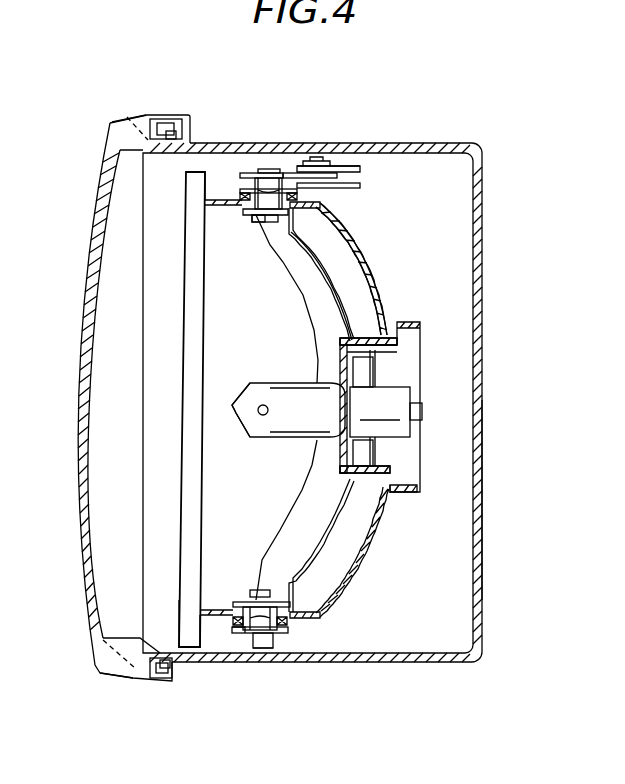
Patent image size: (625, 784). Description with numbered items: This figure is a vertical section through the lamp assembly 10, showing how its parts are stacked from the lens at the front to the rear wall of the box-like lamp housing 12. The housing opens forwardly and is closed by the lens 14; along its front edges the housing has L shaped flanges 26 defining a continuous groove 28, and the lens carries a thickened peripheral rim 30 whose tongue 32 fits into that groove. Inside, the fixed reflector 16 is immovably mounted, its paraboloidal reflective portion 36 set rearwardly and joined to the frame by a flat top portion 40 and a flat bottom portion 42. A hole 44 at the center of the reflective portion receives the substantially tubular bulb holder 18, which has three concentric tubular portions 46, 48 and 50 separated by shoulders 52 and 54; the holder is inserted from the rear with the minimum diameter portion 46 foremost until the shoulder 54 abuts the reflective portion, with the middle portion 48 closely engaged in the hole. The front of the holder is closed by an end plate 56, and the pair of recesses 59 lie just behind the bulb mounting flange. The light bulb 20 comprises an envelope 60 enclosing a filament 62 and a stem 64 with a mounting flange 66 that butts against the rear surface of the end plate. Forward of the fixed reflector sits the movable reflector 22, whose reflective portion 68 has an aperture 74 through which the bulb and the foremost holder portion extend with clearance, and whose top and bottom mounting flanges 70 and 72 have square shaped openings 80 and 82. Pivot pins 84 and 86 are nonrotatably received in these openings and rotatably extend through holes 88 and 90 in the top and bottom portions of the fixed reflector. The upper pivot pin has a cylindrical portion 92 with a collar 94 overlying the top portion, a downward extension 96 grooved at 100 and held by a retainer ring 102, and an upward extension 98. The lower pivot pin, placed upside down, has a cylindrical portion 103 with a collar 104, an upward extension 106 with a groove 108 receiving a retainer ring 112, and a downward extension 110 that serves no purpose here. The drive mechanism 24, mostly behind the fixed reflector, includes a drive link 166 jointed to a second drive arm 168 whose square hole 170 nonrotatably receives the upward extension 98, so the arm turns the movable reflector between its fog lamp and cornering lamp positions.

The lamp assembly 10 is at (495, 98).
The lamp housing 12 is at (432, 143).
The lens 14 is at (80, 298).
The fixed reflector 16 is at (368, 248).
The bulb holder 18 is at (483, 478).
The light bulb 20 is at (240, 428).
The movable reflector 22 is at (346, 272).
The drive mechanism 24 is at (362, 158).
The L shaped flanges 26 is at (186, 115).
The continuous groove 28 is at (170, 123).
The thickened peripheral rim 30 is at (138, 115).
The tongue 32 is at (166, 131).
The reflective portion 36 is at (348, 238).
The flat top portion 40 is at (215, 203).
The flat bottom portion 42 is at (198, 615).
The hole 44 is at (380, 344).
The minimum diameter tubular portion 46 is at (373, 367).
The middle tubular portion 48 is at (387, 353).
The tubular portion 50 is at (410, 322).
The shoulder 52 is at (377, 479).
The shoulder 54 is at (397, 492).
The end plate 56 is at (341, 343).
The recesses 59 is at (373, 382).
The envelope 60 is at (273, 385).
The filament 62 is at (259, 407).
The stem 64 is at (422, 412).
The mounting flange 66 is at (312, 373).
The reflective portion 68 is at (340, 300).
The top mounting flange 70 is at (243, 210).
The bottom mounting flange 72 is at (220, 610).
The aperture 74 is at (378, 335).
The square shaped opening 80 is at (282, 195).
The square shaped opening 82 is at (255, 633).
The upper pivot pin 84 is at (264, 173).
The lower pivot pin 86 is at (275, 630).
The hole 88 is at (246, 173).
The hole 90 is at (285, 625).
The cylindrical portion 92 is at (300, 191).
The collar 94 is at (200, 184).
The downward extension 96 is at (256, 222).
The upward extension 98 is at (272, 180).
The groove 100 is at (270, 222).
The retainer ring 102 is at (245, 214).
The cylindrical portion 103 is at (265, 649).
The collar 104 is at (236, 632).
The upward extension 106 is at (257, 590).
The groove 108 is at (245, 602).
The downward extension 110 is at (263, 648).
The retainer ring 112 is at (236, 617).
The drive link 166 is at (330, 161).
The second drive arm 168 is at (243, 193).
The hole 170 is at (262, 169).